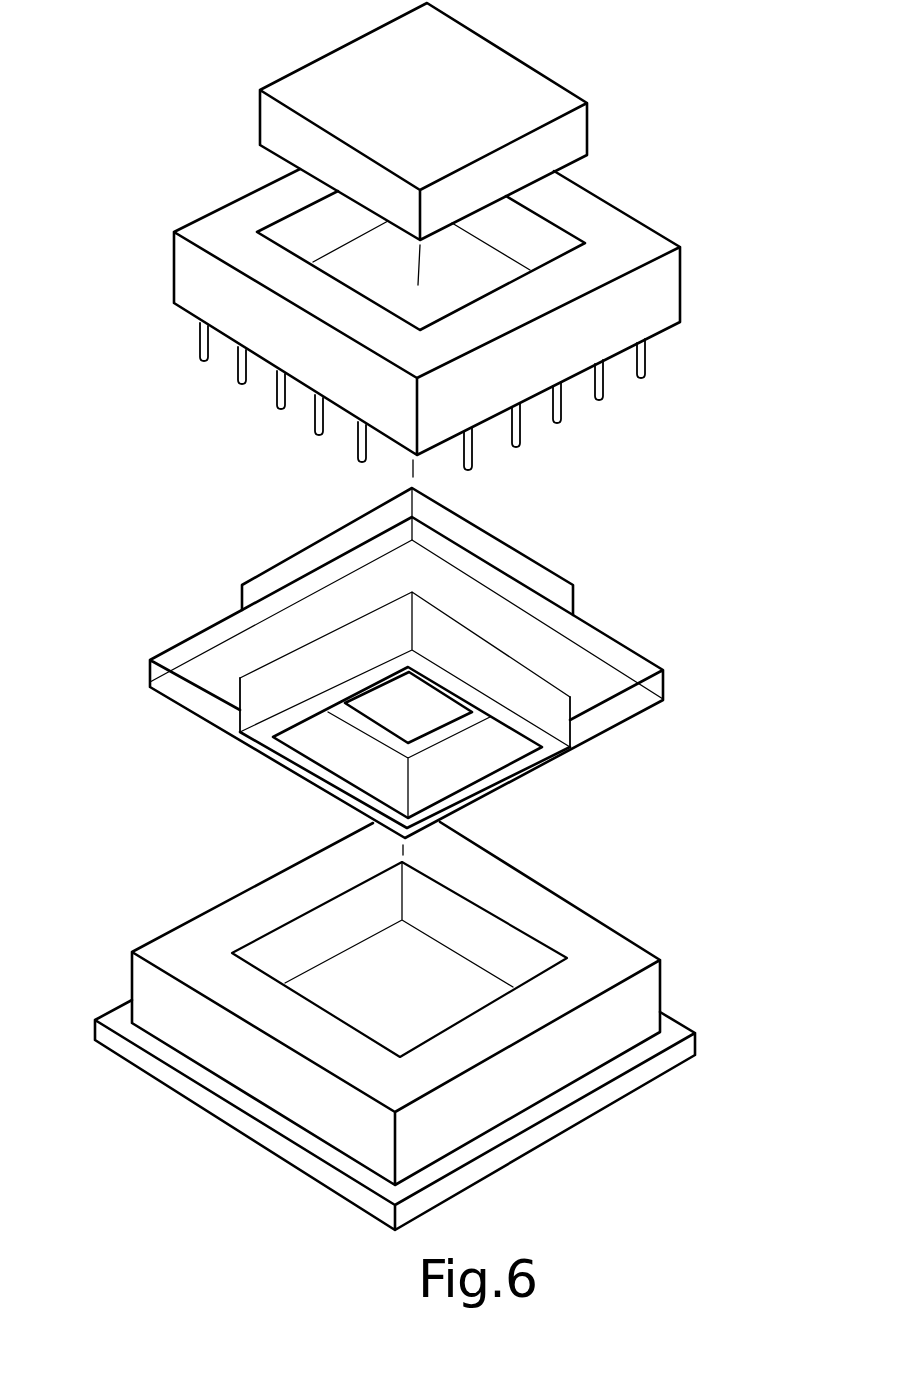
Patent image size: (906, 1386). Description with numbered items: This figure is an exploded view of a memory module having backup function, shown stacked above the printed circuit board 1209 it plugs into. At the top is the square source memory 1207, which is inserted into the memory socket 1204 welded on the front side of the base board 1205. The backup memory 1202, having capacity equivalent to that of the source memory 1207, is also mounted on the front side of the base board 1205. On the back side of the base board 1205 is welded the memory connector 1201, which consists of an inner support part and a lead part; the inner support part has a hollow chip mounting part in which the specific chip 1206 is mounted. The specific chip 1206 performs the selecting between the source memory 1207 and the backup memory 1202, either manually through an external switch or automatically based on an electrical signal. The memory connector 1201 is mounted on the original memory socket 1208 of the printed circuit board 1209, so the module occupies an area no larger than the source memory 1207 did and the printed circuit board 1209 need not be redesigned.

The memory connector 1201 is at (560, 724).
The backup memory 1202 is at (536, 572).
The memory socket 1204 is at (666, 297).
The base board 1205 is at (668, 684).
The specific chip 1206 is at (432, 713).
The source memory 1207 is at (537, 82).
The original memory socket 1208 is at (647, 1000).
The printed circuit board 1209 is at (647, 1070).